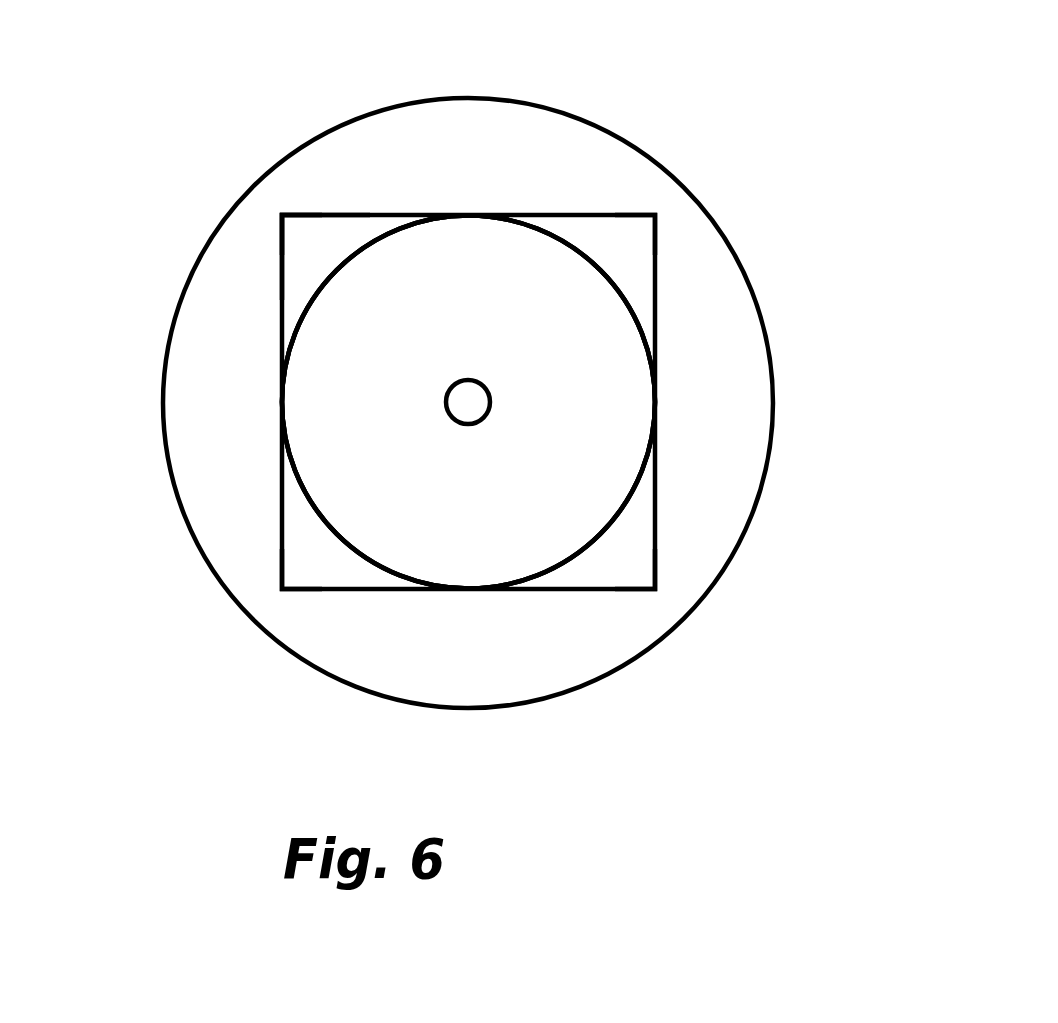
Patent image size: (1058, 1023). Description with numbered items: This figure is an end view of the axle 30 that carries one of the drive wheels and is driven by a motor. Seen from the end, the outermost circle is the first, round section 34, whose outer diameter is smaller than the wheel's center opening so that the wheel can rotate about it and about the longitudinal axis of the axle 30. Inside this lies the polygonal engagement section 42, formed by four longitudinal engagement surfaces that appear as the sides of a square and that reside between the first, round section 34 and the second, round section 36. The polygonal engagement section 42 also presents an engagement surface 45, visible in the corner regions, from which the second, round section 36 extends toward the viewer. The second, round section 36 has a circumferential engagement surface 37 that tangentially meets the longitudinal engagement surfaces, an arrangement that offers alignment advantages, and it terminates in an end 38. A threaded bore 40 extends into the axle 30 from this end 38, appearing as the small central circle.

The axle 30 is at (515, 438).
The first, round section 34 is at (727, 568).
The second, round section 36 is at (588, 470).
The circumferential engagement surface 37 is at (605, 268).
The end 38 is at (412, 443).
The threaded bore 40 is at (495, 398).
The polygonal engagement section 42 is at (238, 305).
The engagement surface 45 is at (316, 250).